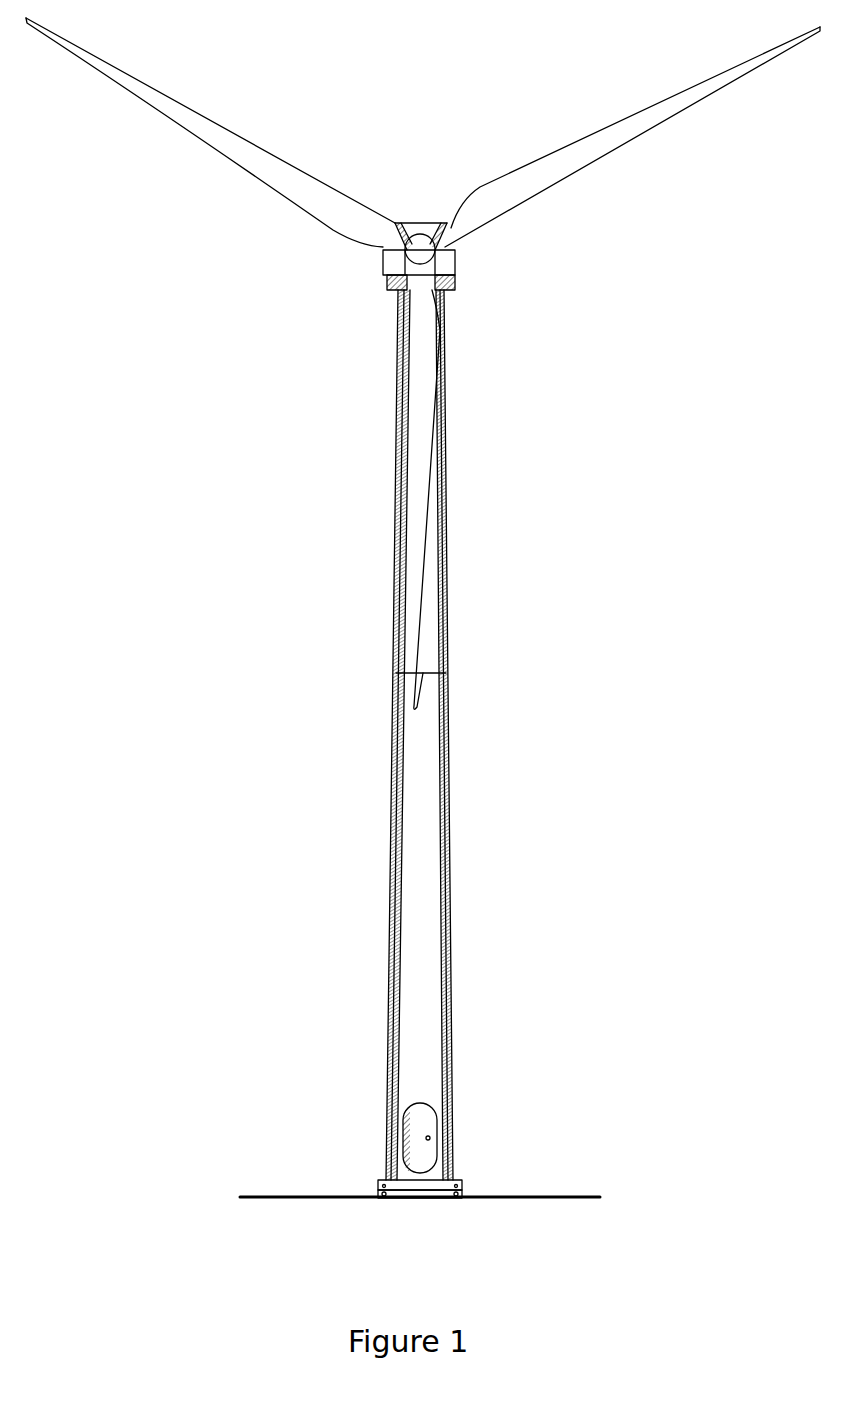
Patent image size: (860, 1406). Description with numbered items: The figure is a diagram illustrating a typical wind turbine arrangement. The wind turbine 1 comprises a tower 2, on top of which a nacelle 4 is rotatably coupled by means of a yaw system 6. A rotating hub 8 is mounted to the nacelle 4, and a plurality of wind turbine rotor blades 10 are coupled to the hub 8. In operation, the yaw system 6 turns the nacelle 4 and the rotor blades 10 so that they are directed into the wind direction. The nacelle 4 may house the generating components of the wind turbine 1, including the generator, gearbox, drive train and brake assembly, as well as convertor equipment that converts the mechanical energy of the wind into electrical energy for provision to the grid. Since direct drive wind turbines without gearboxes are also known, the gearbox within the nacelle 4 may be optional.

The wind turbine 1 is at (134, 171).
The tower 2 is at (437, 847).
The nacelle 4 is at (413, 222).
The yaw system 6 is at (447, 293).
The rotating hub 8 is at (414, 252).
The wind turbine rotor blades 10 is at (221, 146).